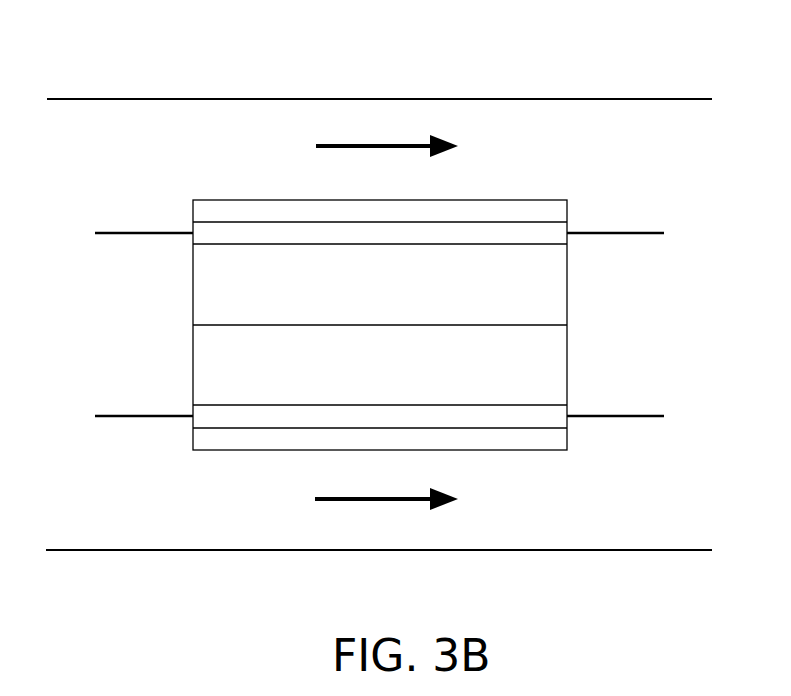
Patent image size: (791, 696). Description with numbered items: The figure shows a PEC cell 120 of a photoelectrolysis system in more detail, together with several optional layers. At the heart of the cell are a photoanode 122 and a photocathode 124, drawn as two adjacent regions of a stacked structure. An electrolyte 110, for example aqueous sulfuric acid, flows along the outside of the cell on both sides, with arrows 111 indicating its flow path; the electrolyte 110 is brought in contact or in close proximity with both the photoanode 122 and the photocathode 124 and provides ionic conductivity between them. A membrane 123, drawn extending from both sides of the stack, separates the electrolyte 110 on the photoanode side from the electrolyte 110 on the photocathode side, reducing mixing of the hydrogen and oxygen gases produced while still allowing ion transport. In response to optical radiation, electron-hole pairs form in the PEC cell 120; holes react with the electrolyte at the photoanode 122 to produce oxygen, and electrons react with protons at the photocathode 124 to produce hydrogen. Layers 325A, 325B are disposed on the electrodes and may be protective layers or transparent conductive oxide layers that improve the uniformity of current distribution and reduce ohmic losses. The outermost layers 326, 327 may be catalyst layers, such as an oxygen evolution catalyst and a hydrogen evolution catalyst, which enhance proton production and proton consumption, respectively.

The electrolyte 110 is at (500, 127).
The arrows 111 is at (380, 146).
The PEC cell 120 is at (286, 71).
The photoanode 122 is at (556, 370).
The membrane 123 is at (144, 326).
The photocathode 124 is at (556, 281).
The layer 325A is at (554, 420).
The layer 325B is at (554, 229).
The lower cladding layer 326 is at (539, 443).
The catalyst layer 327 is at (540, 207).